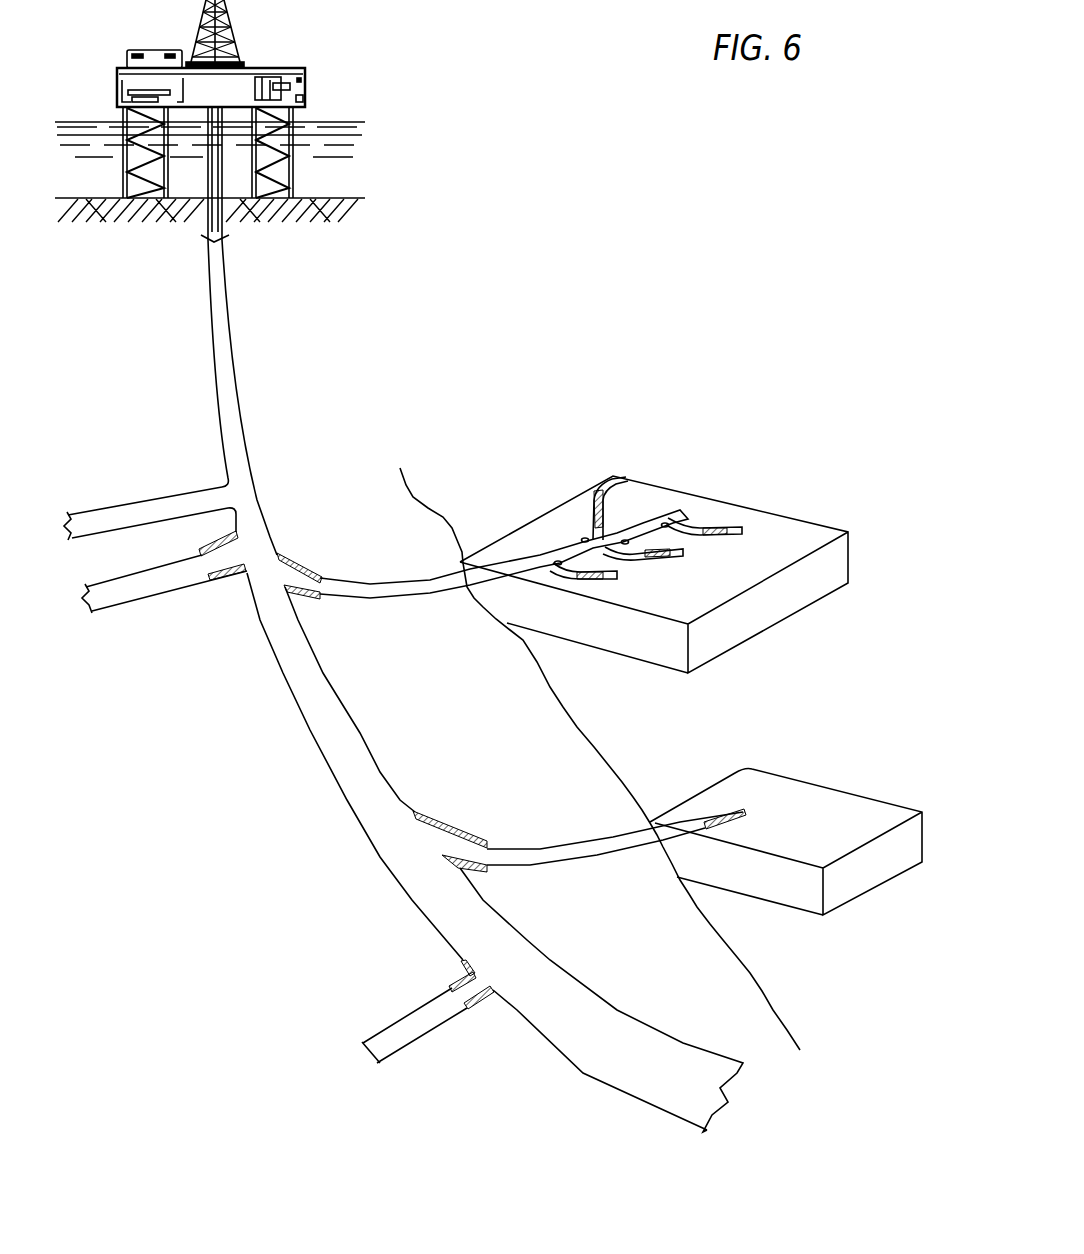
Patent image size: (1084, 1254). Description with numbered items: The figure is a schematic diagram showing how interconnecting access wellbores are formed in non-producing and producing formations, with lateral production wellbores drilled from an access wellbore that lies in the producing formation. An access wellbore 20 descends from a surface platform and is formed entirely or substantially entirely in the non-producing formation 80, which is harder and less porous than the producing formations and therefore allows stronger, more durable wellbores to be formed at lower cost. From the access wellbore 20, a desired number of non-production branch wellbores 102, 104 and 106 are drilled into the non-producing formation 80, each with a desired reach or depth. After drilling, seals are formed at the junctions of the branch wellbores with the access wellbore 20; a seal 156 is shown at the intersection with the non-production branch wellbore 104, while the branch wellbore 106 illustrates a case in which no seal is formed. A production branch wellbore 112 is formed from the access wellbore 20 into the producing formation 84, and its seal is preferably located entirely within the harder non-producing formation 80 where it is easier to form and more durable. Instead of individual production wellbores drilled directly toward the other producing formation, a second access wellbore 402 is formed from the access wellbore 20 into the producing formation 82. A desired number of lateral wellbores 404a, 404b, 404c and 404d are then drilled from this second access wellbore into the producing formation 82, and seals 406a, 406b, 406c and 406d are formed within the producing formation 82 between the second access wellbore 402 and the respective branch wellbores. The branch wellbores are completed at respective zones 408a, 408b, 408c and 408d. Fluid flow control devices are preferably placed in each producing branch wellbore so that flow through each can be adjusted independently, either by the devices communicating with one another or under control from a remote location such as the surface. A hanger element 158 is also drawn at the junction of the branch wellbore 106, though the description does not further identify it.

The access wellbore 20 is at (215, 382).
The non-production branch wellbore 102 is at (117, 507).
The non-production branch wellbore 104 is at (157, 593).
The seal 156 is at (232, 580).
The non-producing formation 80 is at (345, 481).
The producing formation 82 is at (805, 553).
The producing formation 84 is at (827, 833).
The second access wellbore 402 is at (405, 581).
The lateral wellbore 404a is at (597, 489).
The lateral wellbore 404b is at (617, 578).
The lateral wellbore 404c is at (687, 553).
The lateral wellbore 404d is at (742, 530).
The seal 406a is at (583, 538).
The seal 406b is at (538, 569).
The seal 406c is at (628, 540).
The seal 406d is at (718, 523).
The zone 408a is at (597, 508).
The zone 408b is at (597, 580).
The zone 408c is at (657, 558).
The zone 408d is at (720, 528).
The production branch wellbore 112 is at (535, 848).
The non-production branch wellbore 106 is at (397, 1022).
The liner hanger 158 is at (483, 1004).